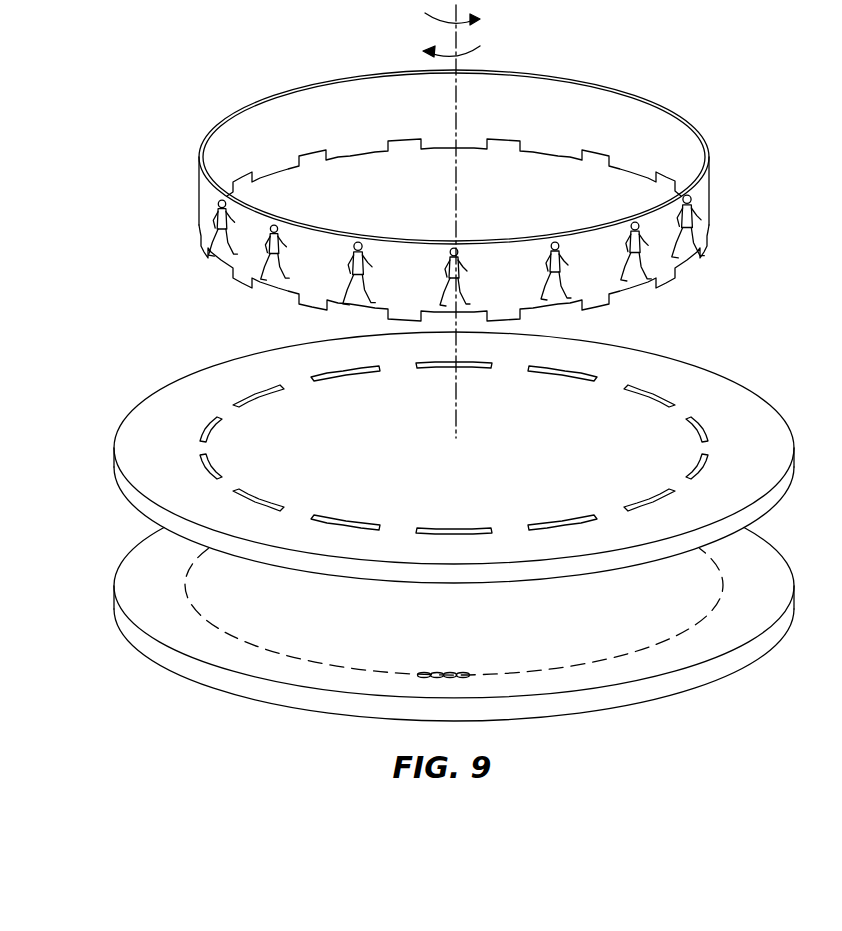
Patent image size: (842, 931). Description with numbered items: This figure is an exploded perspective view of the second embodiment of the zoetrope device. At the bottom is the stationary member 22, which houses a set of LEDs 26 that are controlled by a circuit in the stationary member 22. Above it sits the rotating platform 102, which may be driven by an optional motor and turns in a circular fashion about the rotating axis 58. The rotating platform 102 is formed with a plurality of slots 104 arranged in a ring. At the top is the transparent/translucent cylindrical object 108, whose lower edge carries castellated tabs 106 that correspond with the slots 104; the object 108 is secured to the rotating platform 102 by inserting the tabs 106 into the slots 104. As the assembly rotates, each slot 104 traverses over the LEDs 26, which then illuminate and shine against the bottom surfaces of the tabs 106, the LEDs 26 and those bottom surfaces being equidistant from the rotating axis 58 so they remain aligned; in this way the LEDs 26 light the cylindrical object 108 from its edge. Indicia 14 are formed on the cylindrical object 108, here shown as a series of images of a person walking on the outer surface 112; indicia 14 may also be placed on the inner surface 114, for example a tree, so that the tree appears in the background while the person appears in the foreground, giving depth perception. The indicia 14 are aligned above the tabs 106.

The rotating axis 58 is at (450, 43).
The transparent/translucent cylindrical object 108 is at (187, 125).
The outer surface 112 is at (634, 216).
The inner surface 114 is at (709, 192).
The castellated tabs 106 is at (647, 276).
The indicia 14 is at (473, 267).
The rotating platform 102 is at (417, 452).
The slots 104 is at (215, 417).
The stationary member 22 is at (420, 625).
The LEDs 26 is at (480, 668).